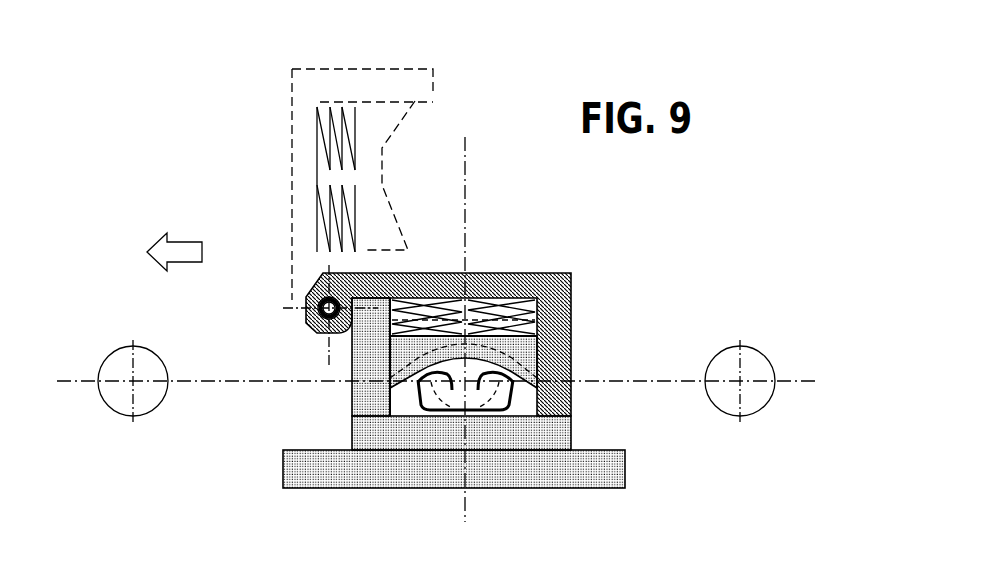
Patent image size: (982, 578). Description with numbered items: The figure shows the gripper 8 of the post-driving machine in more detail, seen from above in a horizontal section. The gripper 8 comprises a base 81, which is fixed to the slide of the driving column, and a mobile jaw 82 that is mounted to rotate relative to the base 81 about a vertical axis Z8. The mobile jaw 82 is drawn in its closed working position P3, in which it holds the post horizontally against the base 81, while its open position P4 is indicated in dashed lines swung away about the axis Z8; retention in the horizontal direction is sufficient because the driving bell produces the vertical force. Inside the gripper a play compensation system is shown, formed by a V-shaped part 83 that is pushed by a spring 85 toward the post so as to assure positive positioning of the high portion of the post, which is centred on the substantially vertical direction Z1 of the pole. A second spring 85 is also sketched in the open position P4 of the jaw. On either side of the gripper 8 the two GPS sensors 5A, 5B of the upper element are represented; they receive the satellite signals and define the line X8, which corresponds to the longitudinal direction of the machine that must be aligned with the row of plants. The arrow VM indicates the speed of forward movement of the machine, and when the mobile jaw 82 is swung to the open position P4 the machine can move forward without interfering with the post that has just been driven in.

The mobile jaw 82 is at (292, 145).
The spring 85 is at (330, 214).
The base 81 is at (573, 438).
The V-shaped part 83 is at (527, 360).
The gripper 8 is at (631, 352).
The GPS sensor 5A is at (153, 347).
The GPS sensor 5B is at (763, 352).
The closed working position P3 is at (593, 290).
The open position P4 is at (402, 70).
The speed of forward movement VM is at (174, 241).
The vertical axis Z8 is at (304, 326).
The line X8 is at (223, 384).
The direction Z1 is at (462, 385).